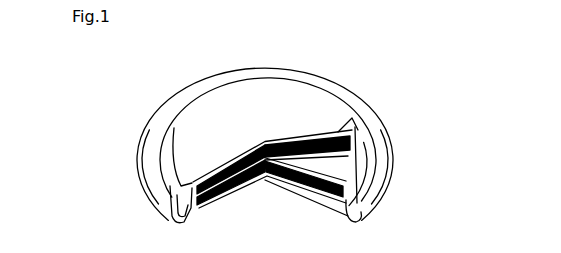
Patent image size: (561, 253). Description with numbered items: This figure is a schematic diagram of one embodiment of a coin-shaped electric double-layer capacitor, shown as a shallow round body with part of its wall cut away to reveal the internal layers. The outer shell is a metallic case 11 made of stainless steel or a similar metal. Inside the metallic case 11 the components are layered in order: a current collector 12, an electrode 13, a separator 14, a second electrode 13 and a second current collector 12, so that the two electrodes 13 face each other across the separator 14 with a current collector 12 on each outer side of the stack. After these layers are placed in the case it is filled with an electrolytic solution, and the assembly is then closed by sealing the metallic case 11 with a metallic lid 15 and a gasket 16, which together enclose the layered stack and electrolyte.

The metallic case 11 is at (152, 194).
The current collector 12 is at (347, 125).
The electrode 13 is at (320, 183).
The separator 14 is at (323, 135).
The metallic lid 15 is at (180, 133).
The gasket 16 is at (373, 190).